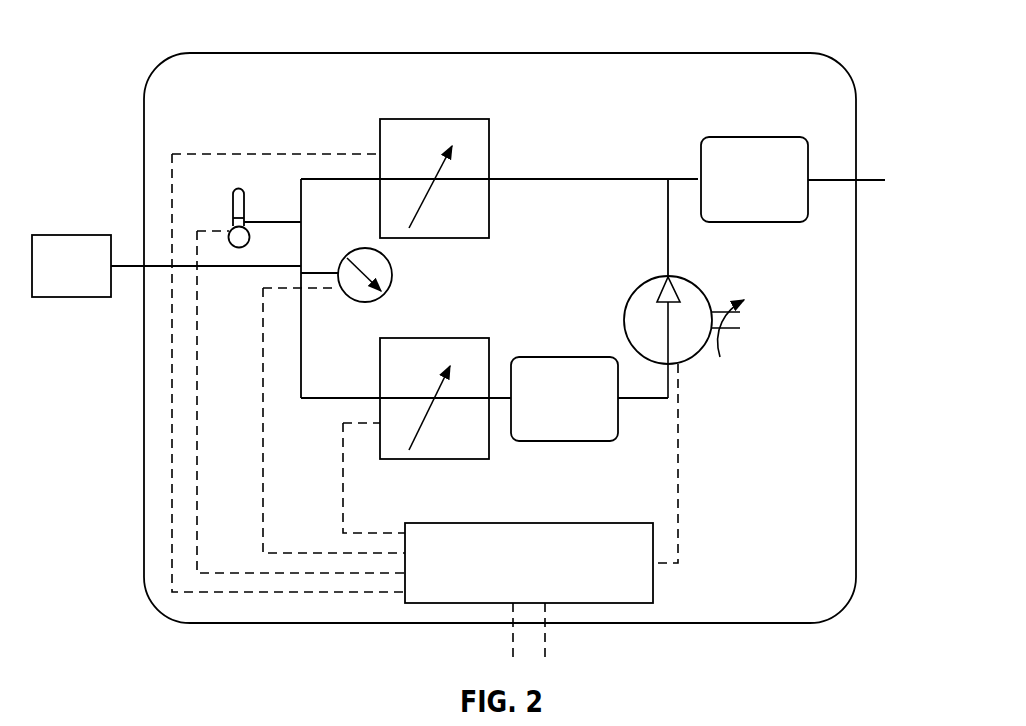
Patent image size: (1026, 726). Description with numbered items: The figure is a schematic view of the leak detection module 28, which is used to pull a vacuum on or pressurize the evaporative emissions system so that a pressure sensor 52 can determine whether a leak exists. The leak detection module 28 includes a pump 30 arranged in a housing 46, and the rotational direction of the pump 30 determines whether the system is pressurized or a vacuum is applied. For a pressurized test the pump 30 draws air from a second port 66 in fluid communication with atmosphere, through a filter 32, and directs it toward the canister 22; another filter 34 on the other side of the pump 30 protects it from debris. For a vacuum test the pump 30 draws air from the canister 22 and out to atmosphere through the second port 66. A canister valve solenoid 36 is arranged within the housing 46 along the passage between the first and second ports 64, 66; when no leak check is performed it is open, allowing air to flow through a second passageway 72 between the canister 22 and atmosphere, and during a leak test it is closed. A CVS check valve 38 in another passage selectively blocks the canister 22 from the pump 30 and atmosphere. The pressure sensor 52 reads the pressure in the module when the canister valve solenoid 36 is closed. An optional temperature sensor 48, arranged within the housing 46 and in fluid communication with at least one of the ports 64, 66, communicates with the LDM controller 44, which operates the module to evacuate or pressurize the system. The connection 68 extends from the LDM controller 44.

The canister 22 is at (88, 280).
The leak detection module 28 is at (542, 317).
The pump 30 is at (680, 363).
The filter 32 is at (753, 137).
The filter 34 is at (555, 357).
The canister valve solenoid 36 is at (489, 142).
The CVS check valve 38 is at (489, 445).
The LDM controller 44 is at (603, 523).
The housing 46 is at (857, 572).
The temperature sensor 48 is at (233, 210).
The pressure sensor 52 is at (362, 303).
The first port 64 is at (135, 276).
The second port 66 is at (868, 174).
The electrical connection 68 is at (551, 641).
The second passageway 72 is at (137, 265).